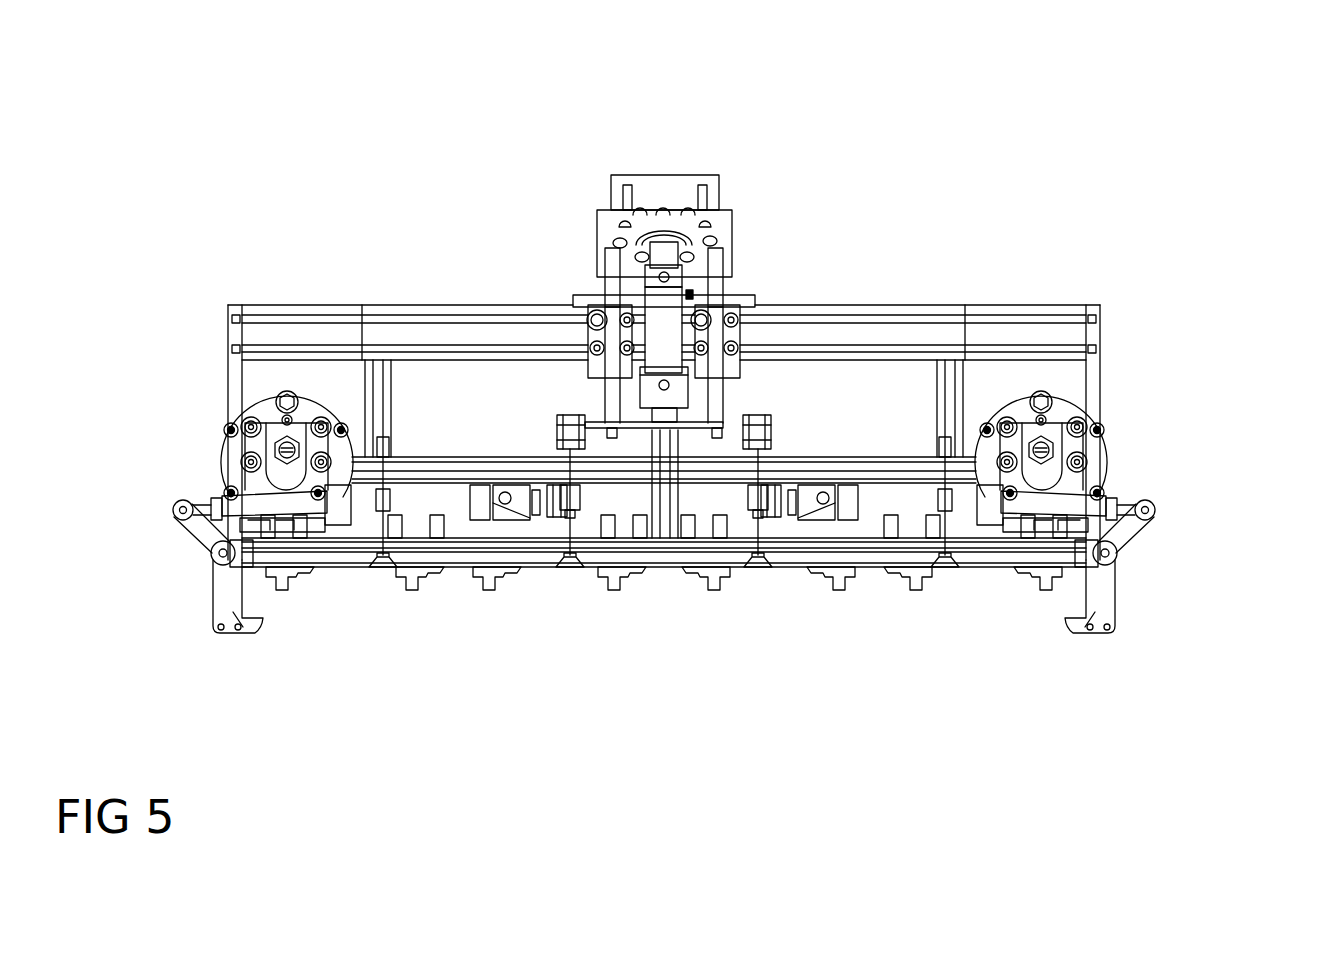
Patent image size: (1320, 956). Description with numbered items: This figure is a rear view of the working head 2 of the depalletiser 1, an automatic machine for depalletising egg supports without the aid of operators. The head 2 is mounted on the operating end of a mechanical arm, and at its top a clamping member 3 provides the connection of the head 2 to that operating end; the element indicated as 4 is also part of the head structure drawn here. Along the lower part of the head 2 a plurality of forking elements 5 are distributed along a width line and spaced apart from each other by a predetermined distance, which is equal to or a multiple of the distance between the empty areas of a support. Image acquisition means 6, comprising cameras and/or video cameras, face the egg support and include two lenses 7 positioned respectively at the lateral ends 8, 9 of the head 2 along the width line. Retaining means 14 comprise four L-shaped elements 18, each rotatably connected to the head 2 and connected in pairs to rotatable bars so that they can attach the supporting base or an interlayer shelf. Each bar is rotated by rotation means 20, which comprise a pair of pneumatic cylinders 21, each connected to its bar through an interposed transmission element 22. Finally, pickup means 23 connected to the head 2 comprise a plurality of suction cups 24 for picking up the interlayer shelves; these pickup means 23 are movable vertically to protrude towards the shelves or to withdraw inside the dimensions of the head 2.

The depalletiser 1 is at (150, 155).
The working head 2 is at (1097, 272).
The clamping member 3 is at (655, 203).
The upper cross beam 4 is at (268, 305).
The forking elements 5 is at (418, 600).
The image acquisition means 6 is at (217, 440).
The lenses 7 is at (238, 480).
The lateral end 8 is at (1150, 415).
The lateral end 9 is at (203, 390).
The retaining means 14 is at (205, 648).
The L-shaped elements 18 is at (235, 610).
The rotation means 20 is at (348, 535).
The pneumatic cylinders 21 is at (430, 498).
The transmission element 22 is at (190, 540).
The pickup means 23 is at (577, 580).
The suction cups 24 is at (597, 570).